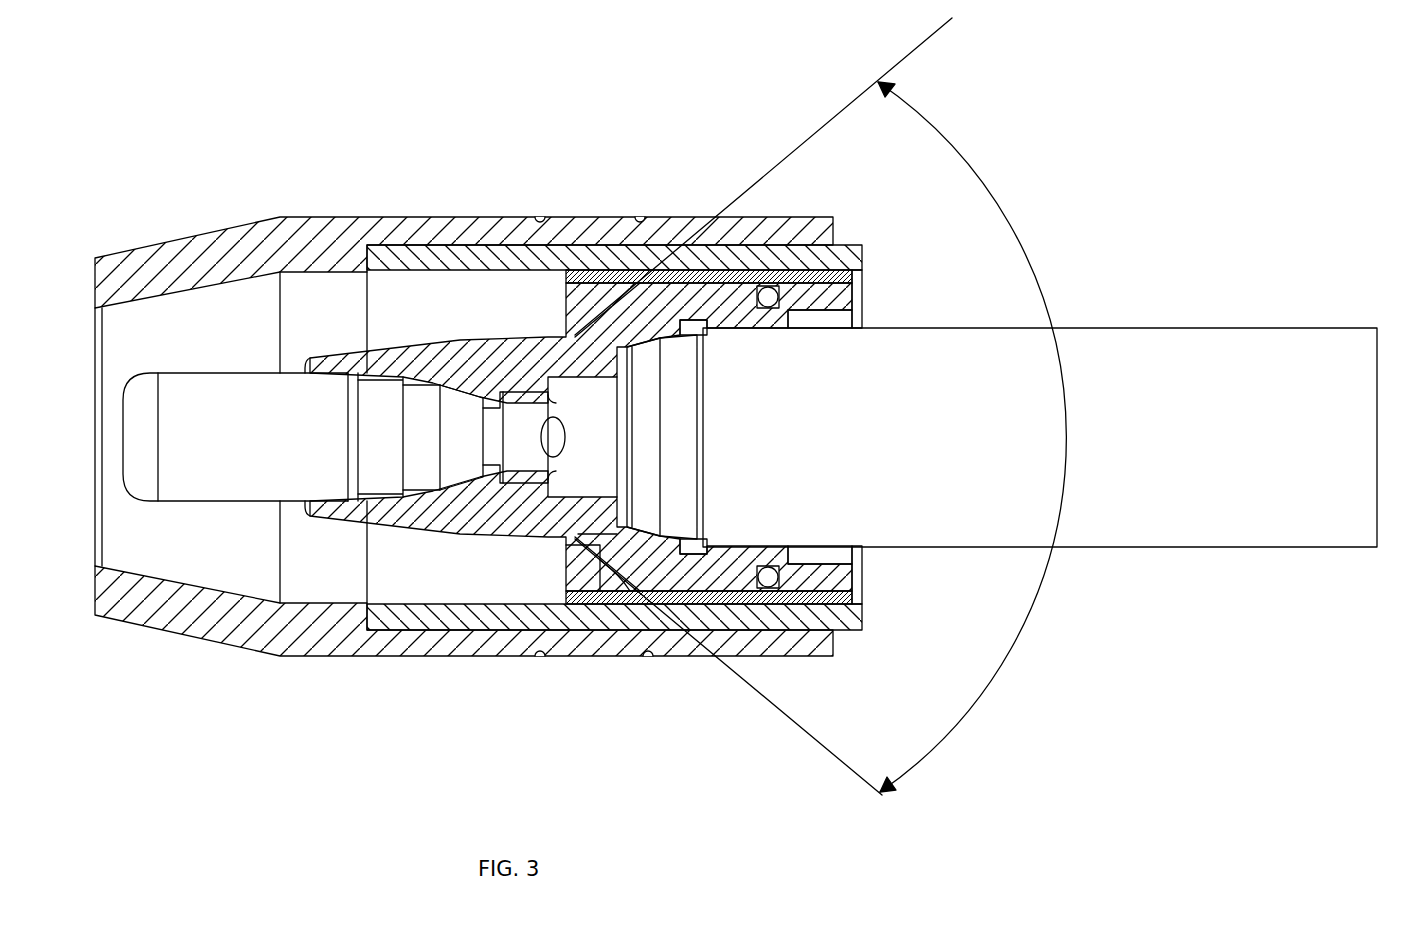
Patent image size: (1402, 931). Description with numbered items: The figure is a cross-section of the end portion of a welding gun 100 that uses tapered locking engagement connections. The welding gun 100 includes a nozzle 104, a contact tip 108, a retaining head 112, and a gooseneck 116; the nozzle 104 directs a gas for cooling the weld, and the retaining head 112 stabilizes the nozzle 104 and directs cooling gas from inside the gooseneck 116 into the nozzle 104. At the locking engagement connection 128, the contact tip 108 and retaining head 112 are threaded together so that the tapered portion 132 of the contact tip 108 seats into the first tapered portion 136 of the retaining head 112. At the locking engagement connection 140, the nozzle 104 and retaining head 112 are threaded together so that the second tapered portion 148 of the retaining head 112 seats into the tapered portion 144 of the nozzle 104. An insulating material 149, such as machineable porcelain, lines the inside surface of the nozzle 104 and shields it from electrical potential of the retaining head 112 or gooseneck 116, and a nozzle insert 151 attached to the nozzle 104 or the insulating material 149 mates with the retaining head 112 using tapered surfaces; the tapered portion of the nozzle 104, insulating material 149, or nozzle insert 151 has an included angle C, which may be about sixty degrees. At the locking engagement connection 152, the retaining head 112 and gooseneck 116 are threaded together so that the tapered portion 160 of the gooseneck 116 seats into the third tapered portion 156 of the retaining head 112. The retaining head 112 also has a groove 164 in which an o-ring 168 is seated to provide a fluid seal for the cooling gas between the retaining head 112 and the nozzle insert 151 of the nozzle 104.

The welding gun 100 is at (1185, 712).
The nozzle 104 is at (200, 247).
The contact tip 108 is at (197, 488).
The retaining head 112 is at (475, 480).
The gooseneck 116 is at (1202, 340).
The locking engagement connection 128 is at (465, 393).
The tapered portion 132 is at (455, 470).
The first tapered portion 136 is at (465, 485).
The locking engagement connection 140 is at (598, 565).
The tapered portion 144 is at (608, 290).
The second tapered portion 148 is at (640, 600).
The insulating material 149 is at (382, 268).
The nozzle insert 151 is at (612, 565).
The locking engagement connection 152 is at (615, 540).
The third tapered portion 156 is at (668, 328).
The tapered portion 160 is at (635, 380).
The groove 164 is at (775, 592).
The o-ring 168 is at (778, 578).
The included angle C is at (944, 166).